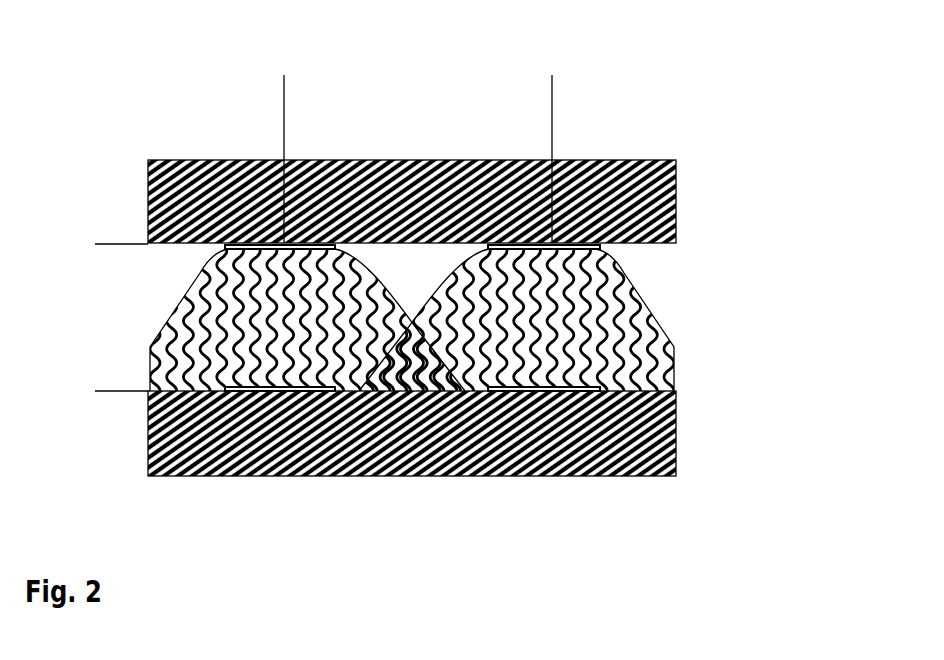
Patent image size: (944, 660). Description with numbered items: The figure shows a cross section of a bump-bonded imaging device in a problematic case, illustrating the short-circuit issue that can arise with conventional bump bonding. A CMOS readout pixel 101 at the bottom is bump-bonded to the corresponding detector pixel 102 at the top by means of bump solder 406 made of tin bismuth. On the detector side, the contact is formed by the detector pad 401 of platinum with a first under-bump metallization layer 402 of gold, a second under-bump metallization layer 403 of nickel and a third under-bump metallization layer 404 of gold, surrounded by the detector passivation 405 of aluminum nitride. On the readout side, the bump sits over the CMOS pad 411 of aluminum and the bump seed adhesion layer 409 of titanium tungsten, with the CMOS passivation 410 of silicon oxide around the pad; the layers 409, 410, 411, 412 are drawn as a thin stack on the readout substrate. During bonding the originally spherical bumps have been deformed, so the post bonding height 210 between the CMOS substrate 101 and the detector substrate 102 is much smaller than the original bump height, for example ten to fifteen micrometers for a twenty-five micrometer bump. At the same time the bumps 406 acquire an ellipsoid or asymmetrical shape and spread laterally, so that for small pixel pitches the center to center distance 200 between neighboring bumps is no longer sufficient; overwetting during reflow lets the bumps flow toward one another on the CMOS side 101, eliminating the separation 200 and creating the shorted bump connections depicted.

The CMOS pixel 101 is at (582, 484).
The detector pixel 102 is at (612, 149).
The center to center distance 200 is at (545, 73).
The post bonding height 210 is at (95, 251).
The detector pad 401 is at (632, 247).
The UBM 1 402 is at (412, 247).
The UBM 2 403 is at (412, 247).
The UBM 3 404 is at (412, 247).
The detector passivation 405 is at (412, 247).
The bump solder 406 is at (718, 323).
The bump seed adhesion 409 is at (632, 383).
The CMOS passivation 410 is at (412, 389).
The CMOS pad 411 is at (412, 389).
The lower electrode 412 is at (412, 389).